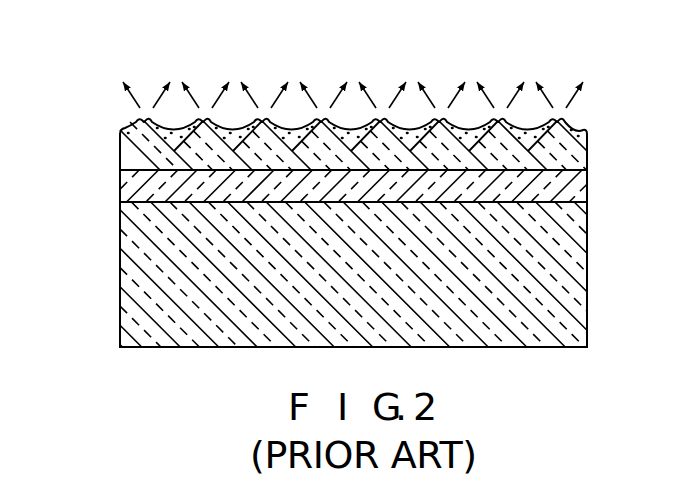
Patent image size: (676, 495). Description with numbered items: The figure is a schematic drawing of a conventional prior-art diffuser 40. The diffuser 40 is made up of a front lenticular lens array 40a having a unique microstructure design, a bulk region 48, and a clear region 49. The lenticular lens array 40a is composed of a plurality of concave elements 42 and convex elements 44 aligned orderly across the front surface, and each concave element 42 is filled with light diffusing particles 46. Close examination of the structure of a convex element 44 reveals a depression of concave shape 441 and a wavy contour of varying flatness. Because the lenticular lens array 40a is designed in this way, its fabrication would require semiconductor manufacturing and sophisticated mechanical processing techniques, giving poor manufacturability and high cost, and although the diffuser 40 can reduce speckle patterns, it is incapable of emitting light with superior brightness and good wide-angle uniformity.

The diffuser 40 is at (310, 183).
The lenticular lens array 40a is at (146, 147).
The concave element 42 is at (427, 140).
The convex element 44 is at (383, 122).
The depression of concave shape 441 is at (383, 121).
The light diffusing particles 46 is at (295, 131).
The bulk region 48 is at (137, 187).
The clear region 49 is at (130, 280).